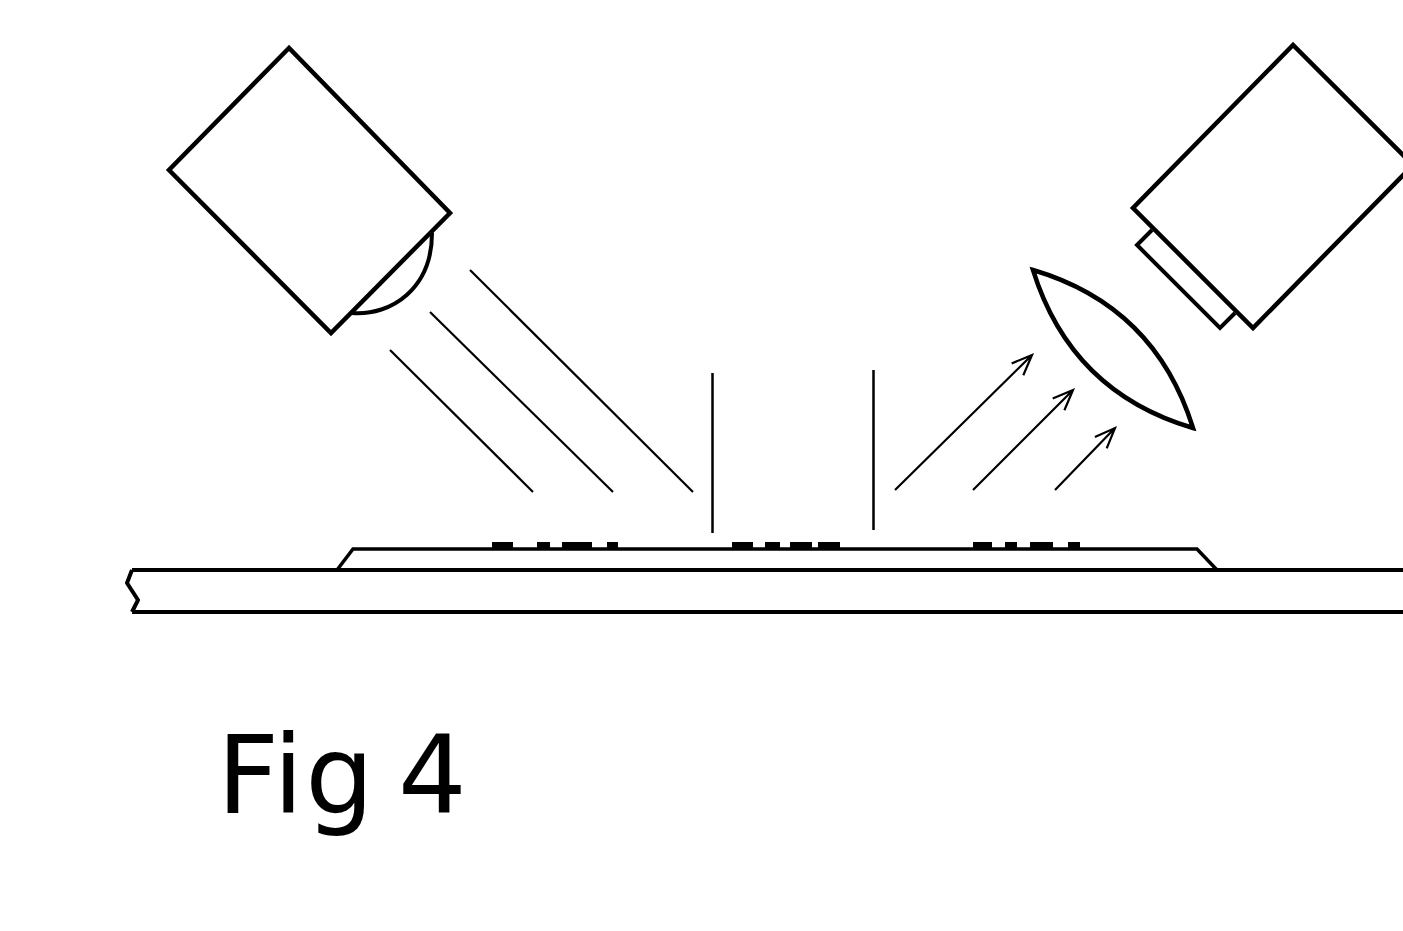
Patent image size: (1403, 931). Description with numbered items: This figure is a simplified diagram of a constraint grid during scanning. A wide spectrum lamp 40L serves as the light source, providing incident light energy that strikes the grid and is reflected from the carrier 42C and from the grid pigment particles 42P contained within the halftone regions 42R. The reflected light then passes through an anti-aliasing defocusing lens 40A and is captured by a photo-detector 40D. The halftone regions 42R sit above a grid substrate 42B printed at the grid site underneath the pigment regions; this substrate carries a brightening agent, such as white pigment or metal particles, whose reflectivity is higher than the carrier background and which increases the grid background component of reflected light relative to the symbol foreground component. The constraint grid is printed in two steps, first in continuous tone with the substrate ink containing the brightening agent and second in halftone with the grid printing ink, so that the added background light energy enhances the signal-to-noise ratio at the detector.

The wide spectrum lamp 40L is at (309, 190).
The photo-detector 40D is at (1268, 186).
The anti-aliasing defocusing lens 40A is at (1063, 293).
The halftone regions 42R is at (856, 405).
The grid pigment particles 42P is at (793, 541).
The grid substrate 42B is at (427, 557).
The carrier 42C is at (293, 587).